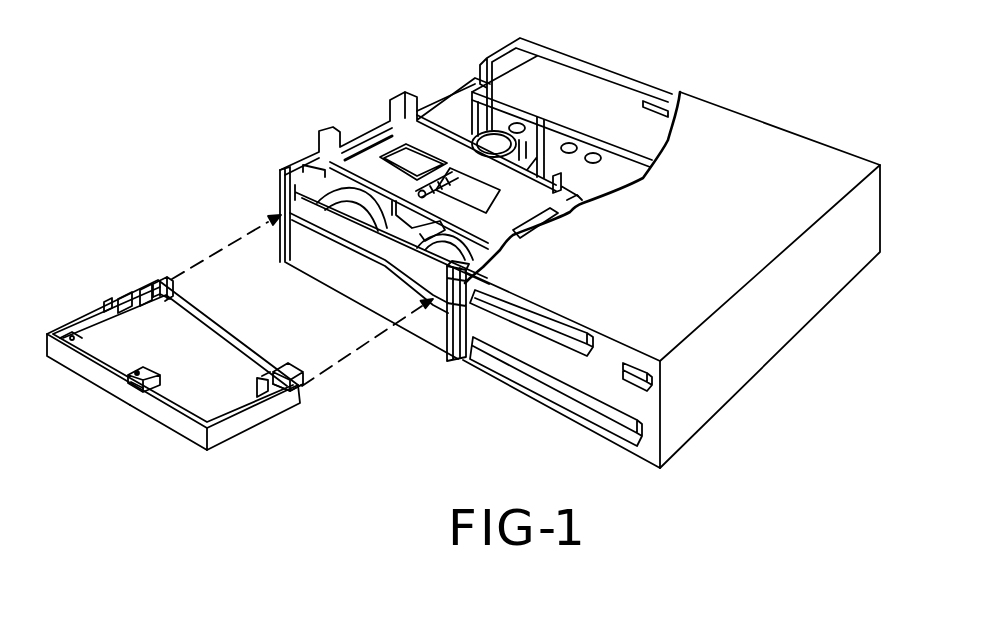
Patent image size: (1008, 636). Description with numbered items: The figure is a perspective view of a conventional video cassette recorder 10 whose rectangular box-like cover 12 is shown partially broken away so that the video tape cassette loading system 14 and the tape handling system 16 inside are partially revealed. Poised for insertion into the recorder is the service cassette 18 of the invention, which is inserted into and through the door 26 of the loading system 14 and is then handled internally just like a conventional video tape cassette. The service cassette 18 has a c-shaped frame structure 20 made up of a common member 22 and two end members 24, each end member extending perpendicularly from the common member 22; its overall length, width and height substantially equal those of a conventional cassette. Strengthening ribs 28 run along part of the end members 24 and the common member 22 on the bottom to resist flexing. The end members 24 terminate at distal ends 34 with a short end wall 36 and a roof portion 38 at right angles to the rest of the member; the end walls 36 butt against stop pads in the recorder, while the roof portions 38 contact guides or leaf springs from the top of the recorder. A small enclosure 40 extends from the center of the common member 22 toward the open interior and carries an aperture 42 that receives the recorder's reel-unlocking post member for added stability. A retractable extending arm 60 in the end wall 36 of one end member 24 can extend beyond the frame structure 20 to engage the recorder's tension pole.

The video cassette recorder 10 is at (797, 313).
The cover 12 is at (752, 130).
The video tape cassette loading system 14 is at (447, 100).
The tape handling system 16 is at (516, 140).
The service cassette 18 is at (262, 418).
The frame structure 20 is at (83, 370).
The common member 22 is at (180, 430).
The end members 24 is at (110, 297).
The door 26 is at (432, 283).
The strengthening ribs 28 is at (80, 327).
The distal ends 34 is at (121, 308).
The end wall 36 is at (162, 300).
The roof portion 38 is at (143, 287).
The enclosure 40 is at (147, 366).
The aperture 42 is at (133, 384).
The extending arm 60 is at (168, 276).